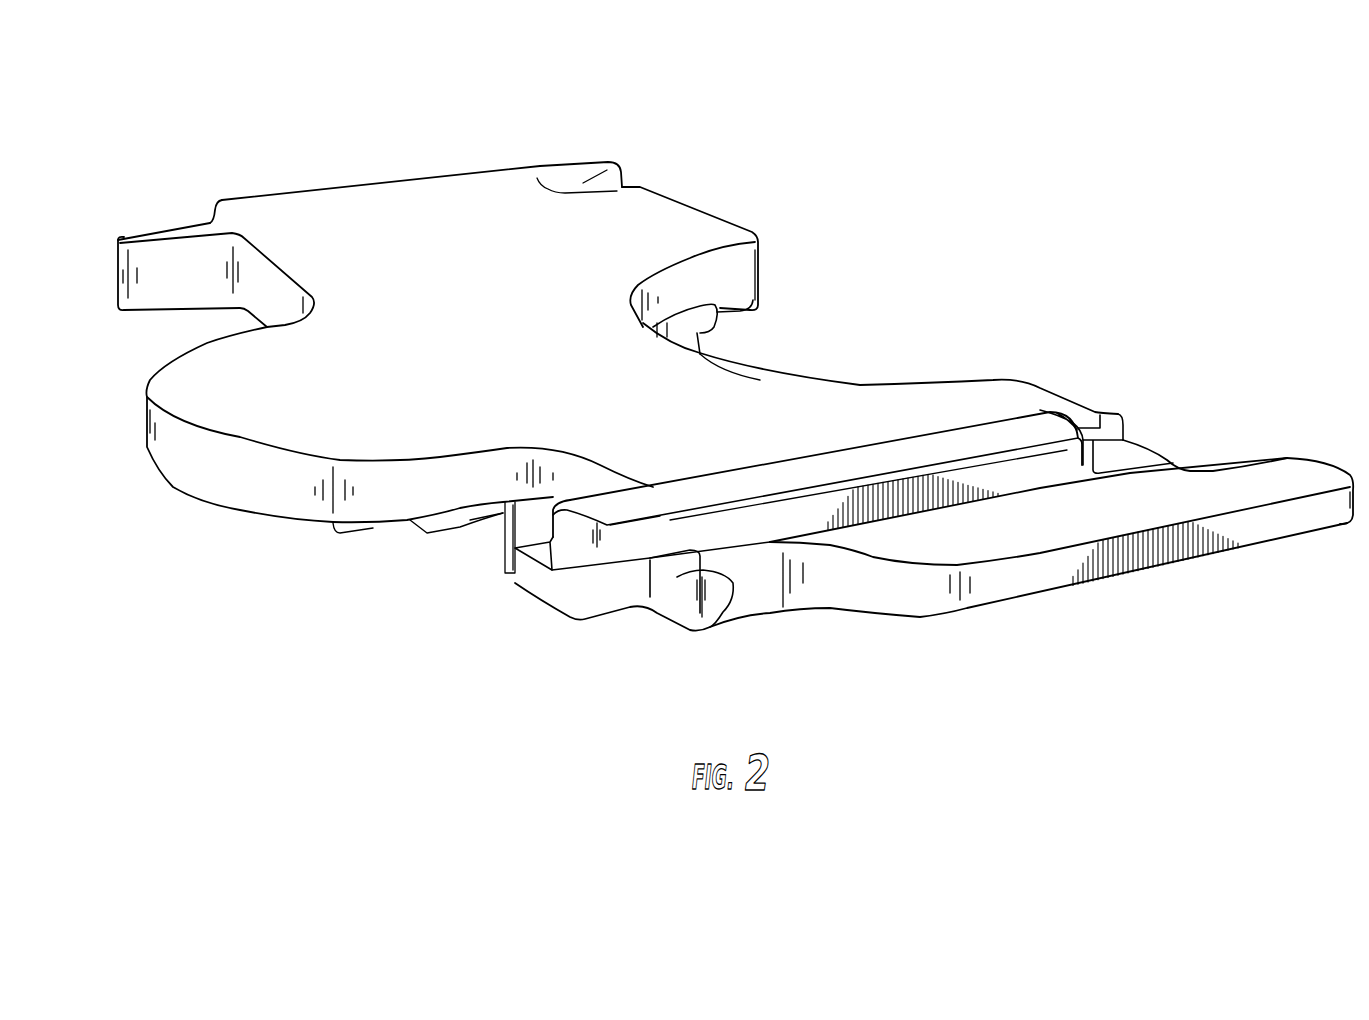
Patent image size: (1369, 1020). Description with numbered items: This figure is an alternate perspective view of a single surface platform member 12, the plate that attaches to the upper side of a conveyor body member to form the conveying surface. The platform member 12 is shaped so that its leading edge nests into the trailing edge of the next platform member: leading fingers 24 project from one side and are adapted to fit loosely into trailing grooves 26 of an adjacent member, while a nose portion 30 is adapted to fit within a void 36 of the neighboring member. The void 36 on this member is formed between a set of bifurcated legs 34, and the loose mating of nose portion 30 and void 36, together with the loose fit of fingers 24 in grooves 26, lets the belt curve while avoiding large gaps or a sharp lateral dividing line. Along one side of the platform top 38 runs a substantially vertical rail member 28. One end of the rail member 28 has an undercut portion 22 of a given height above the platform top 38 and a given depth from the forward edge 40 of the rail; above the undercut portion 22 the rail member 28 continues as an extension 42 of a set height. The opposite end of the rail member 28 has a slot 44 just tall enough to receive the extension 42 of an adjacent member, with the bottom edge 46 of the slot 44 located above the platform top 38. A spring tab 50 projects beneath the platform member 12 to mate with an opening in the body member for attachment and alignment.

The surface platform member 12 is at (698, 131).
The undercut portion 22 is at (732, 595).
The leading fingers 24 is at (120, 268).
The trailing grooves 26 is at (583, 183).
The rail member 28 is at (812, 463).
The nose portion 30 is at (200, 387).
The bifurcated legs 34 is at (673, 222).
The void 36 is at (743, 267).
The platform top 38 is at (804, 416).
The forward edge 40 is at (577, 540).
The extension 42 is at (653, 537).
The slot 44 is at (1103, 420).
The bottom edge 46 is at (1143, 455).
The spring tabs 50 is at (525, 523).